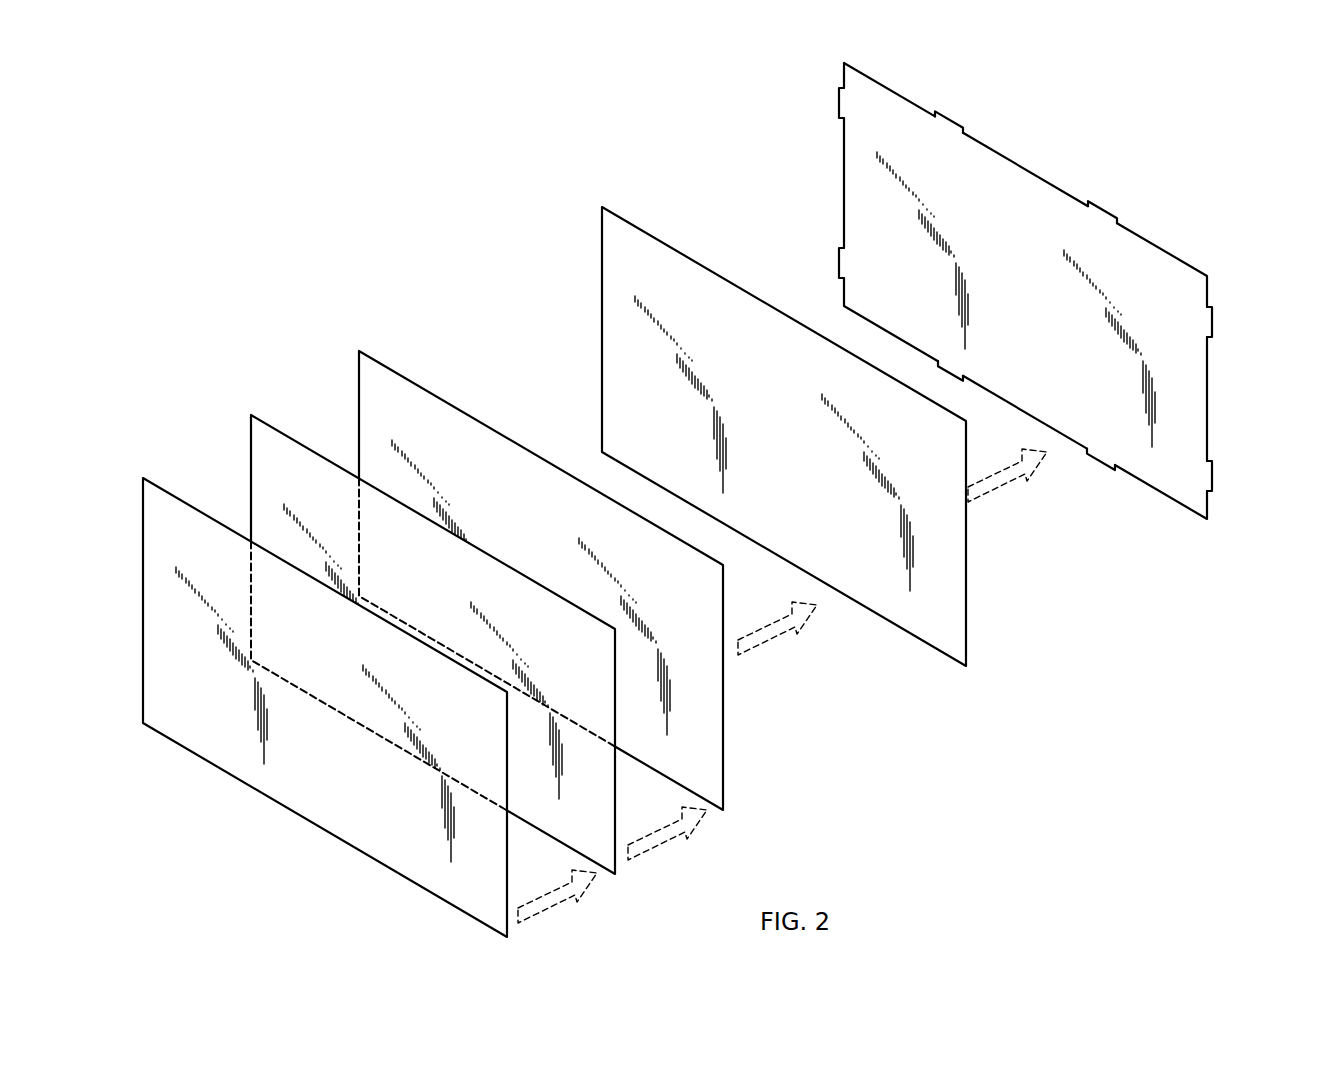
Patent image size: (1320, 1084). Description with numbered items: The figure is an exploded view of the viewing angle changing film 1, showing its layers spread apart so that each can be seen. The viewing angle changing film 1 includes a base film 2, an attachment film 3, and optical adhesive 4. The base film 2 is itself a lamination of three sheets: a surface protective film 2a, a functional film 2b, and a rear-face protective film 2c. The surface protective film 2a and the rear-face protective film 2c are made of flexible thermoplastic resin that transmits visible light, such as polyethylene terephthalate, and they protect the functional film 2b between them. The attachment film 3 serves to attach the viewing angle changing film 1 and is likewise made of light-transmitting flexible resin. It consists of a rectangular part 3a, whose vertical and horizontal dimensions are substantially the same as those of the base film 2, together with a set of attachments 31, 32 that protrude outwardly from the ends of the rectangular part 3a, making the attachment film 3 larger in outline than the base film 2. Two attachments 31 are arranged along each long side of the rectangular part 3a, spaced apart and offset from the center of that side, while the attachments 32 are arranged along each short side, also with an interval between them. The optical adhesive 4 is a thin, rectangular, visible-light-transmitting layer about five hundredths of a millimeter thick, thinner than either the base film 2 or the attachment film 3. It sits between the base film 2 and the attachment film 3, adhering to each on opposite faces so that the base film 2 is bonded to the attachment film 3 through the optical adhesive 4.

The viewing angle changing film 1 is at (217, 333).
The base film 2 is at (112, 443).
The surface protective film 2a is at (188, 503).
The functional film 2b is at (298, 440).
The rear-face protective film 2c is at (411, 379).
The attachment film 3 is at (826, 168).
The rectangular part 3a is at (1032, 192).
The optical adhesive 4 is at (601, 312).
The attachments 31 is at (946, 121).
The attachments 32 is at (838, 104).